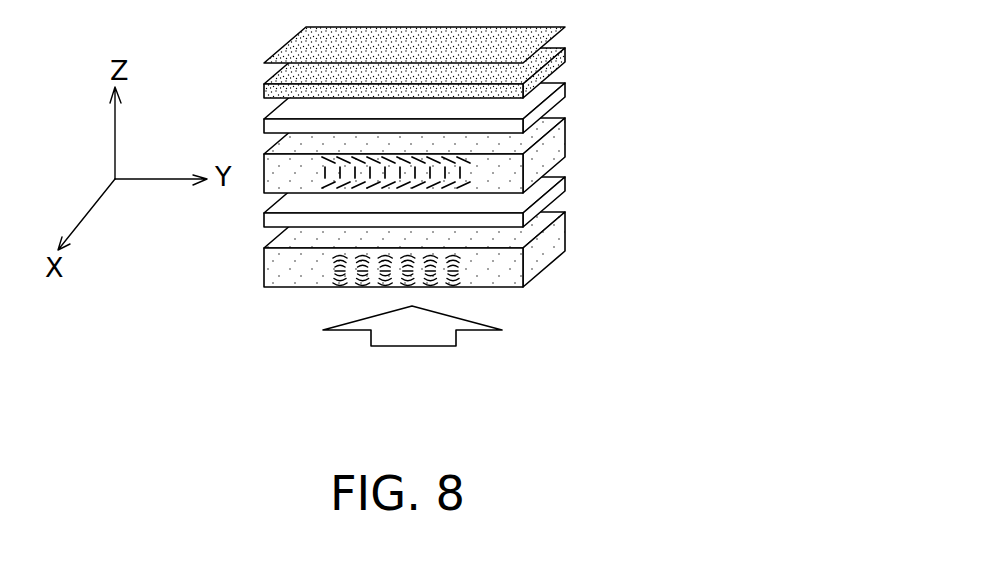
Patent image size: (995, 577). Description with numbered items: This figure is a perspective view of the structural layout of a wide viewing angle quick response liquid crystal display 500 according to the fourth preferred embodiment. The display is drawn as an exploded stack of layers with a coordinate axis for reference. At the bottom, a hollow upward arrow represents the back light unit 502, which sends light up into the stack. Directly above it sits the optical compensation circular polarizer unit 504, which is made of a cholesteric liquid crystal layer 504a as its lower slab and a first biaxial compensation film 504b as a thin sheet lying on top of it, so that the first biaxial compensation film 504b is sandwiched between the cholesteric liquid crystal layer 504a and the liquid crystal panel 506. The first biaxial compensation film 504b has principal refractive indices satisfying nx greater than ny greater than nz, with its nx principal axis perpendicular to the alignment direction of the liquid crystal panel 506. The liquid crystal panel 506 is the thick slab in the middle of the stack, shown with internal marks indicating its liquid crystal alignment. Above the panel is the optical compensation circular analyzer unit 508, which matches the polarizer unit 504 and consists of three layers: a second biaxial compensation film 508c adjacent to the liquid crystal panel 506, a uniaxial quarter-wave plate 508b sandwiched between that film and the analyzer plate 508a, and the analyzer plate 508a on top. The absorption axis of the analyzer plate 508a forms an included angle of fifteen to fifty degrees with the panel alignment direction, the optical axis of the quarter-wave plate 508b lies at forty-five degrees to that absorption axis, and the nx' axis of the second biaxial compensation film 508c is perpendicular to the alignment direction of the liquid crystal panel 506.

The wide viewing angle quick response liquid crystal display 500 is at (521, 194).
The back light unit 502 is at (450, 336).
The optical compensation circular polarizer unit 504 is at (521, 232).
The cholesteric liquid crystal layer 504a is at (562, 240).
The first biaxial compensation film 504b is at (560, 195).
The liquid crystal panel 506 is at (558, 147).
The optical compensation circular analyzer unit 508 is at (521, 68).
The analyzer plate 508a is at (537, 27).
The uniaxial quarter-wave plate 508b is at (565, 57).
The second biaxial compensation film 508c is at (565, 95).